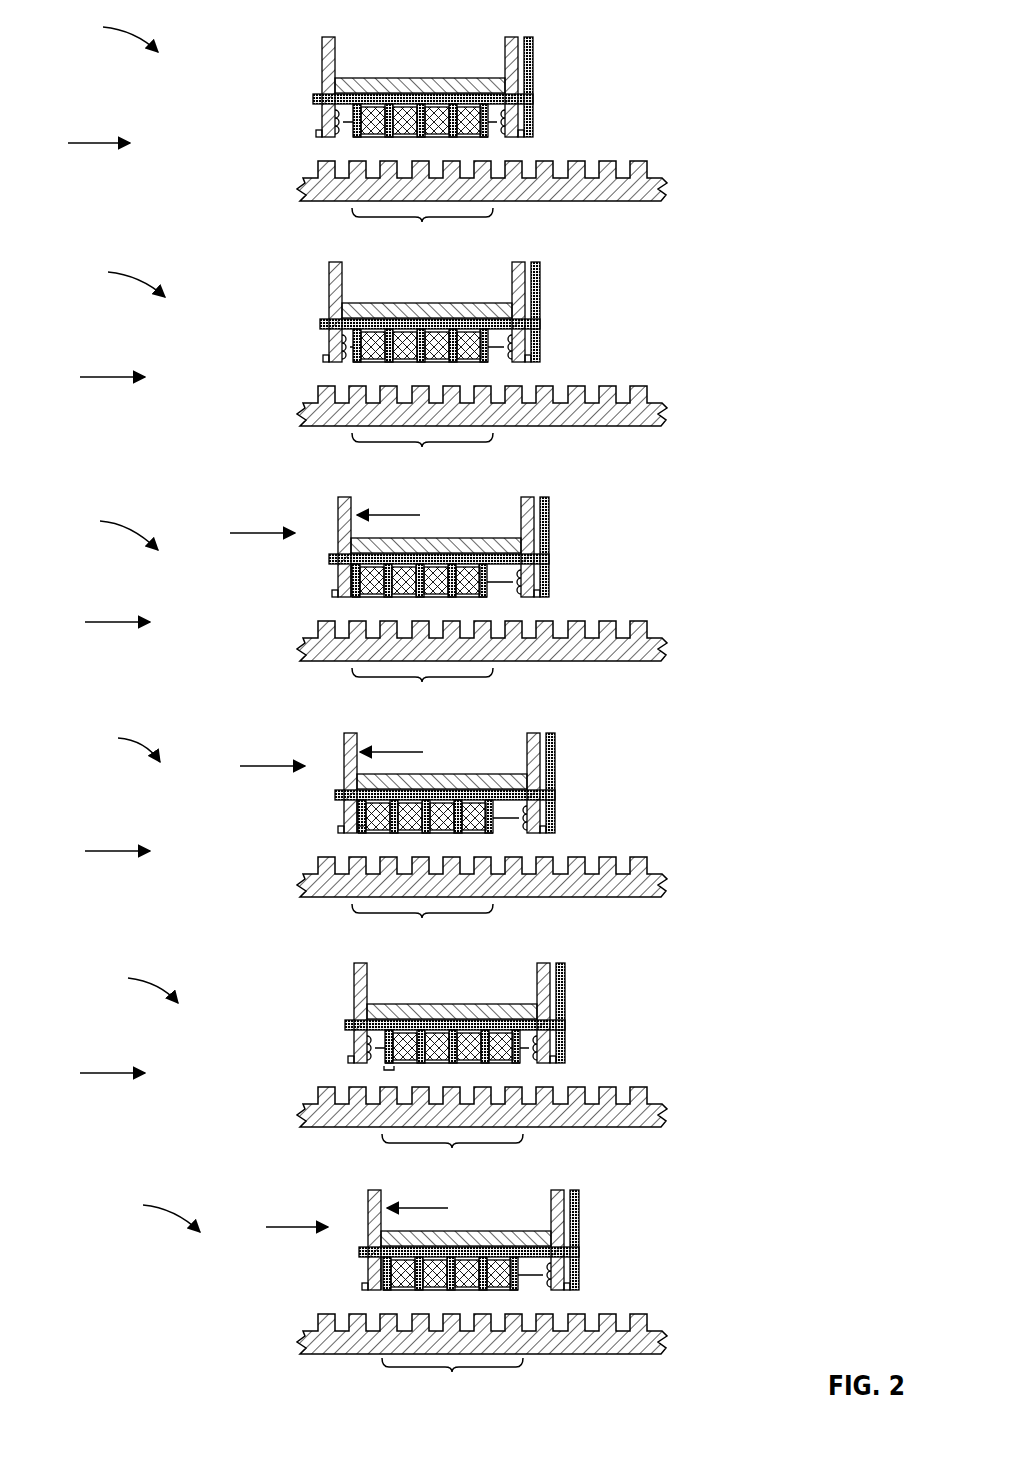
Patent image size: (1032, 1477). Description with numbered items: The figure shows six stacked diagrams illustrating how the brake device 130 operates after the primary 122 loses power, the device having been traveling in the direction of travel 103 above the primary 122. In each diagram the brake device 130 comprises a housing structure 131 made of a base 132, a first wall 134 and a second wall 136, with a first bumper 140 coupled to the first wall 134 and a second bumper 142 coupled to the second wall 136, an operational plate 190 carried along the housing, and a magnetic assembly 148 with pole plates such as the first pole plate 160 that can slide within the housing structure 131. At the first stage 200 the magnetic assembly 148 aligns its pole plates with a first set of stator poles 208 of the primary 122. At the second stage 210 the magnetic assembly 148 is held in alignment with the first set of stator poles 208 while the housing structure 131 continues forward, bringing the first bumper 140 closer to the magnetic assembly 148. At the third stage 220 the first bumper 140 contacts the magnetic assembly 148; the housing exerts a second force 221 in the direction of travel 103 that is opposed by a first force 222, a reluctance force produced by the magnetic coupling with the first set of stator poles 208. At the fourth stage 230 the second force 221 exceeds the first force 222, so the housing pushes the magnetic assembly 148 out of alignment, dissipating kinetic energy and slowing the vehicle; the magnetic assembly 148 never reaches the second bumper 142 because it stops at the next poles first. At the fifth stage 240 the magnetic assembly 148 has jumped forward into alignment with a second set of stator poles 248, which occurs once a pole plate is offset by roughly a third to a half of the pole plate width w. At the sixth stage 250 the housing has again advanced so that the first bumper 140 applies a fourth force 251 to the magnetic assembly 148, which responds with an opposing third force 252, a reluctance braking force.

The direction of travel 103 is at (106, 579).
The primary 122 is at (300, 190).
The brake device 130 is at (489, 685).
The housing structure 131 is at (367, 687).
The base 132 is at (400, 78).
The first wall 134 is at (322, 115).
The second wall 136 is at (505, 58).
The first bumper 140 is at (342, 138).
The second bumper 142 is at (512, 364).
The magnetic assembly 148 is at (470, 150).
The first pole plate 160 is at (360, 831).
The operational plate 190 is at (536, 105).
The first stage 200 is at (105, 35).
The first set of stator poles 208 is at (423, 576).
The second stage 210 is at (111, 280).
The third stage 220 is at (103, 530).
The second force 221 is at (252, 633).
The first force 222 is at (436, 630).
The fourth stage 230 is at (112, 745).
The fifth stage 240 is at (126, 986).
The second set of stator poles 248 is at (450, 1265).
The sixth stage 250 is at (146, 1214).
The fourth force 251 is at (277, 1211).
The third force 252 is at (463, 1205).
The width of the pole plate w is at (391, 1077).